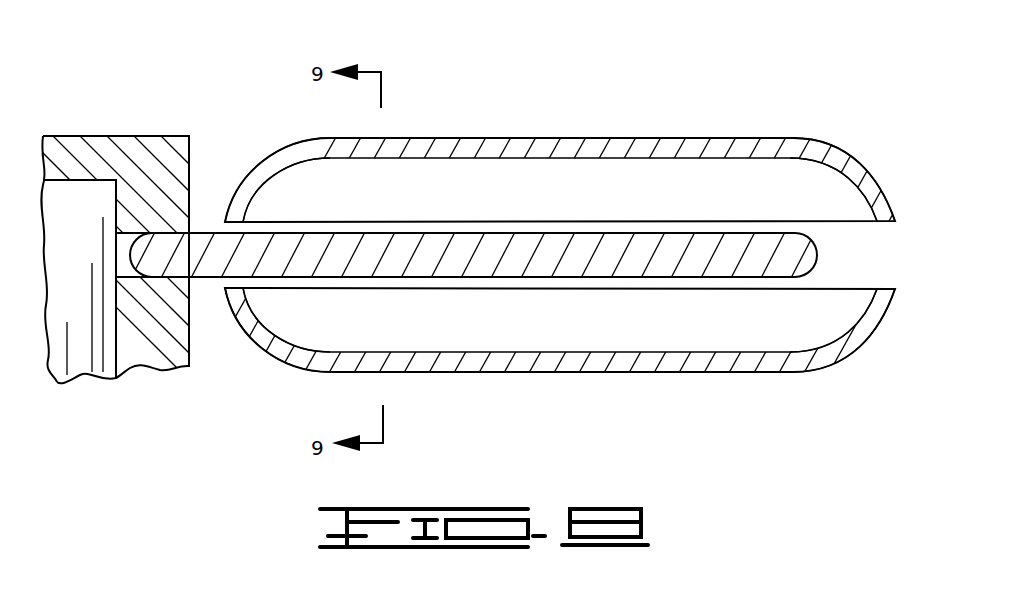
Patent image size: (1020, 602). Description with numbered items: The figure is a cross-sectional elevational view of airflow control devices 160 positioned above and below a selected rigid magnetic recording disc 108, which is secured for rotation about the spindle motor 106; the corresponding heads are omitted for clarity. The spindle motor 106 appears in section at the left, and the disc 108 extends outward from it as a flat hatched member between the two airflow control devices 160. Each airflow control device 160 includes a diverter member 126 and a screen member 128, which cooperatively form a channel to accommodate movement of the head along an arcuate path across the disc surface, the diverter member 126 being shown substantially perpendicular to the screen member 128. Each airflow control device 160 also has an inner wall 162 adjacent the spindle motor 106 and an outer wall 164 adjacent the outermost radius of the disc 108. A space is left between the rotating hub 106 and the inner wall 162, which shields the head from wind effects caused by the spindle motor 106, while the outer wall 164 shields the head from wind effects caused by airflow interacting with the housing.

The spindle motor 106 is at (100, 108).
The rigid magnetic recording disc 108 is at (816, 253).
The diverter member 126 is at (652, 182).
The screen member 128 is at (497, 138).
The airflow control device 160 is at (780, 70).
The inner wall 162 is at (250, 142).
The outer wall 164 is at (873, 172).